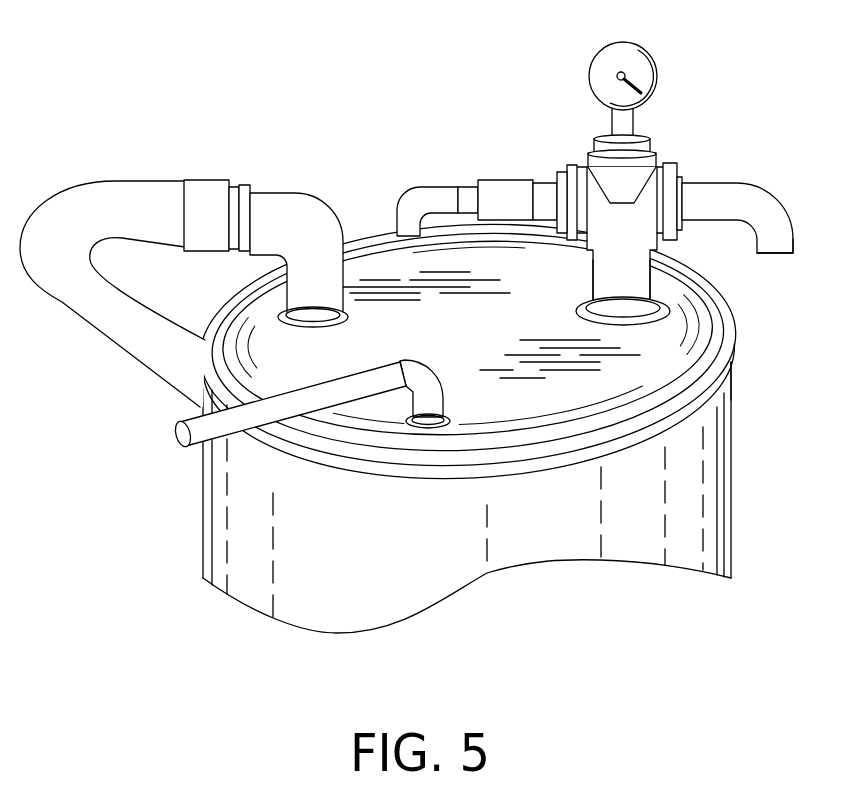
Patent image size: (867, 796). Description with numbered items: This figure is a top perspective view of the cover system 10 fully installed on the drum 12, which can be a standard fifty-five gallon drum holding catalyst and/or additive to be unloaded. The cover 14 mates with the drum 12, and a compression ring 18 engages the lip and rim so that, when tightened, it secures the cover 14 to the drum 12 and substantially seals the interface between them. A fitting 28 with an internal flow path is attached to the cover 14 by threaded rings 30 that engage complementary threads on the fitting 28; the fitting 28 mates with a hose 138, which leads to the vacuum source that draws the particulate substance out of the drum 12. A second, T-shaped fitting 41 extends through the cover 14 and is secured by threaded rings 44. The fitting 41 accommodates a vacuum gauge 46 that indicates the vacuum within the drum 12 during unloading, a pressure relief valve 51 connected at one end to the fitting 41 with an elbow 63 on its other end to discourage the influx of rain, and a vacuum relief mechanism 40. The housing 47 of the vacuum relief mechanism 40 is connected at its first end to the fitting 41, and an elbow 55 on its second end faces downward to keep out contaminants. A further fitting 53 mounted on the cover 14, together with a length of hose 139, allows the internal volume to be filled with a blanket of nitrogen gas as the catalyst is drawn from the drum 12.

The cover system 10 is at (676, 134).
The drum 12 is at (575, 537).
The cover 14 is at (399, 345).
The compression ring 18 is at (703, 412).
The fitting 28 is at (313, 240).
The threaded rings 30 is at (323, 331).
The vacuum relief mechanism 40 is at (766, 199).
The fitting 41 is at (610, 257).
The threaded rings 44 is at (638, 322).
The vacuum gauge 46 is at (618, 60).
The housing 47 is at (714, 221).
The pressure relief valve 51 is at (498, 200).
The fitting 53 is at (425, 393).
The elbow 55 is at (770, 210).
The elbow 63 is at (420, 203).
The hose 138 is at (138, 210).
The hose 139 is at (270, 407).